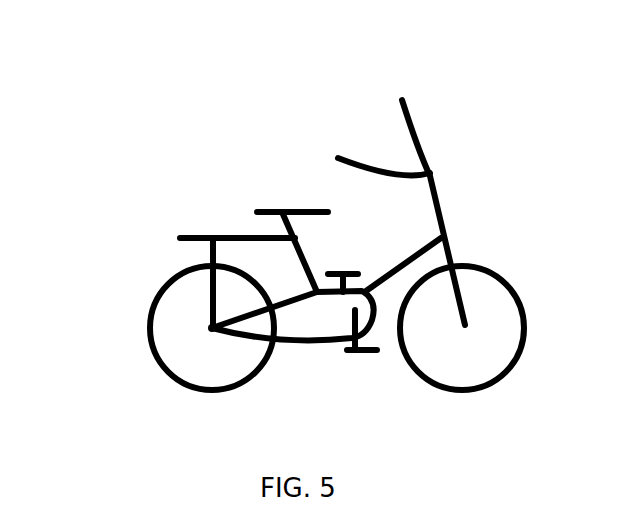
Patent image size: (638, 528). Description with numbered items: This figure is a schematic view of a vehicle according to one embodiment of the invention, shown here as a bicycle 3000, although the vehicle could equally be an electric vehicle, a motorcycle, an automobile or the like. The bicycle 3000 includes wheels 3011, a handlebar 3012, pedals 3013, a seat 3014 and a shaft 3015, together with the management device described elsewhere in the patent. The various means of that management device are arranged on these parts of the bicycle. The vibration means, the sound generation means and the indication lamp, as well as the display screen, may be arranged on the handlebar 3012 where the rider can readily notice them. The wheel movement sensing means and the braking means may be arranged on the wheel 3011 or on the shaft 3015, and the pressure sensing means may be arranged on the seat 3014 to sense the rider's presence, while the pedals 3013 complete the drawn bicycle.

The bicycle 3000 is at (148, 170).
The wheels 3011 is at (145, 337).
The handlebar 3012 is at (432, 170).
The pedals 3013 is at (353, 320).
The seat 3014 is at (282, 208).
The shaft 3015 is at (210, 330).